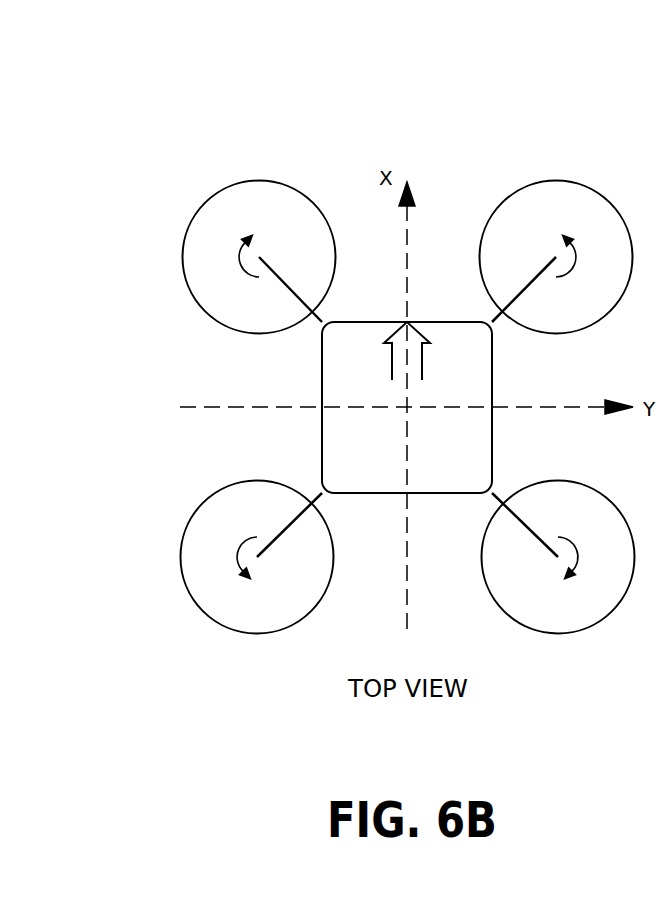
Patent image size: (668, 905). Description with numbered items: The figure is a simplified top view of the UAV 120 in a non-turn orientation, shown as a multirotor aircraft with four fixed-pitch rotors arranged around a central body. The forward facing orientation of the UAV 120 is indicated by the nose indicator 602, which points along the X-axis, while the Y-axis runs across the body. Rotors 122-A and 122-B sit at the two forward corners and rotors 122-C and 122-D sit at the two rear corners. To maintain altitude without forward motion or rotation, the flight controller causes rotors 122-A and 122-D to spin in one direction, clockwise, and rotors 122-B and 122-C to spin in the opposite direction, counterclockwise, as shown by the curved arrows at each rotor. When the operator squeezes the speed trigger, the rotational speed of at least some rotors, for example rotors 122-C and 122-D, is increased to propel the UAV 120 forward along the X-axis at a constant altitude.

The UAV 120 is at (471, 483).
The rotor 122-A is at (280, 218).
The rotor 122-B is at (589, 218).
The rotor 122-C is at (289, 617).
The rotor 122-D is at (599, 613).
The nose indicator 602 is at (428, 332).